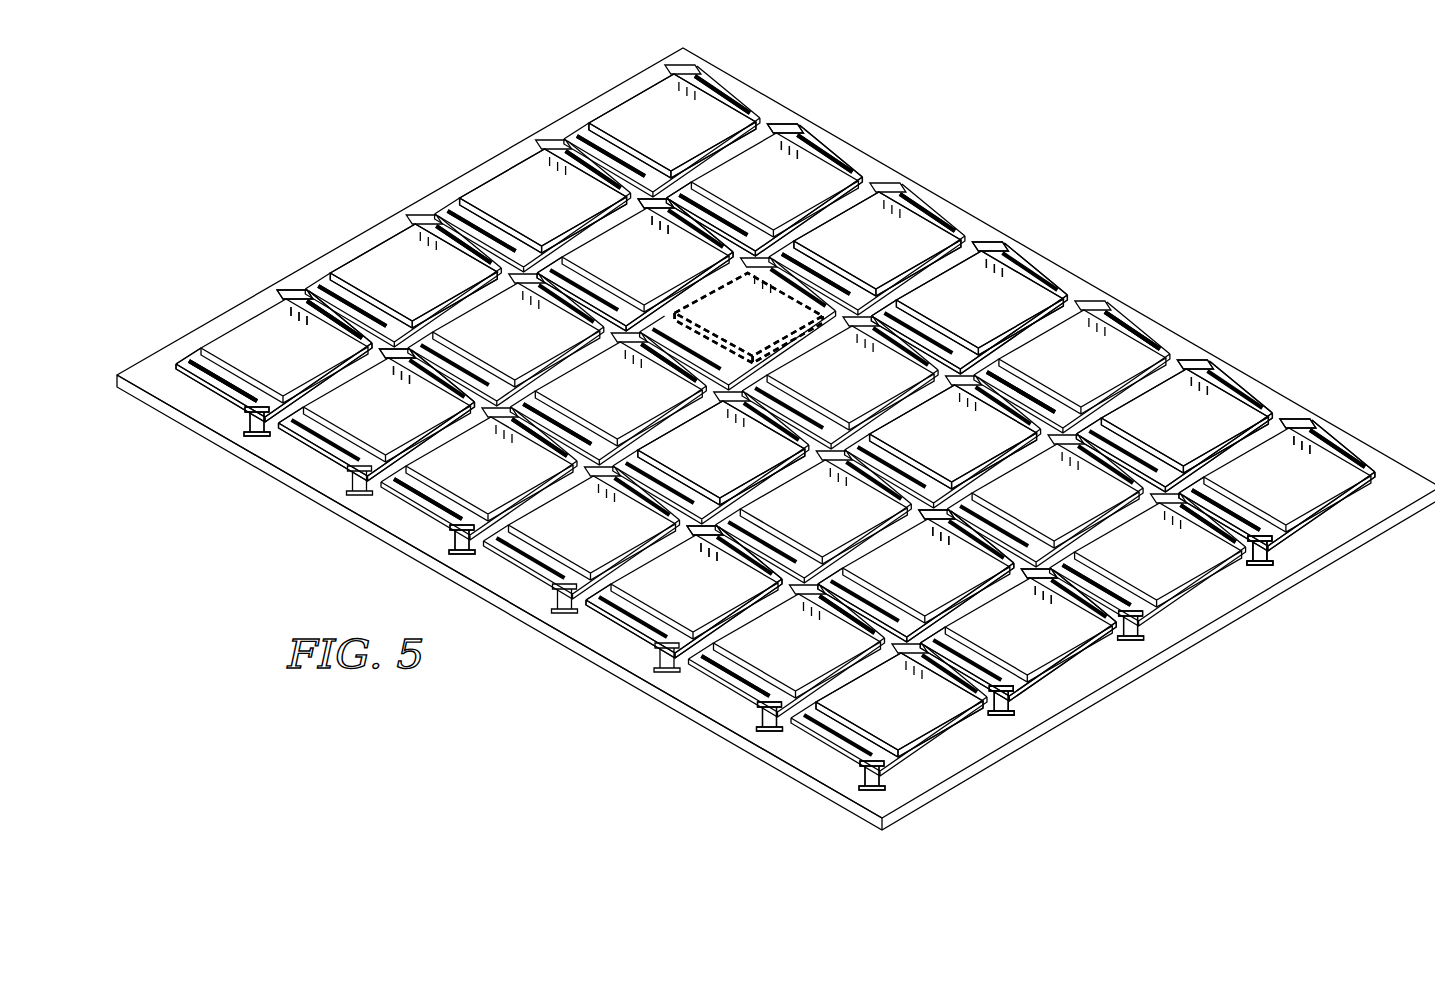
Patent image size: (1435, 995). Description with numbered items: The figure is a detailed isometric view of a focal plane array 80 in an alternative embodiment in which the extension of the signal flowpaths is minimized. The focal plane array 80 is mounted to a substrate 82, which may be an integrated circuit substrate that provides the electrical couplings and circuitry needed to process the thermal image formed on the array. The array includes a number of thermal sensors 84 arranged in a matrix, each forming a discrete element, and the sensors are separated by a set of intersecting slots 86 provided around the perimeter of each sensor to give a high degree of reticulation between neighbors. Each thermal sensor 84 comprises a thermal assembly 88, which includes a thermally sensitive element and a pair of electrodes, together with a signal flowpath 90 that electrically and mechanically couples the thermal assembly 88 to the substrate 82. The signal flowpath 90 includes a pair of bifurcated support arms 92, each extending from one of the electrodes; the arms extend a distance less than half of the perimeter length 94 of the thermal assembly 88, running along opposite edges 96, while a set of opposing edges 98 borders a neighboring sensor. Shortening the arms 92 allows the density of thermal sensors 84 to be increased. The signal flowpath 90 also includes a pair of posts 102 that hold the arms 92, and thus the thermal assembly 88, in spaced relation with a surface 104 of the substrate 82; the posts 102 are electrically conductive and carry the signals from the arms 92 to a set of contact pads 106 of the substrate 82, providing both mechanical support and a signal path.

The focal plane array 80 is at (1099, 174).
The substrate 82 is at (631, 673).
The thermal sensor 84 is at (693, 116).
The intersecting slots 86 is at (777, 124).
The thermal assembly 88 is at (213, 366).
The signal flowpath 90 is at (707, 80).
The support arm 92 is at (324, 329).
The perimeter length 94 is at (774, 334).
The opposite edges 96 is at (761, 434).
The opposing edges 98 is at (681, 279).
The post 102 is at (246, 432).
The surface 104 is at (371, 518).
The contact pads 106 is at (262, 441).